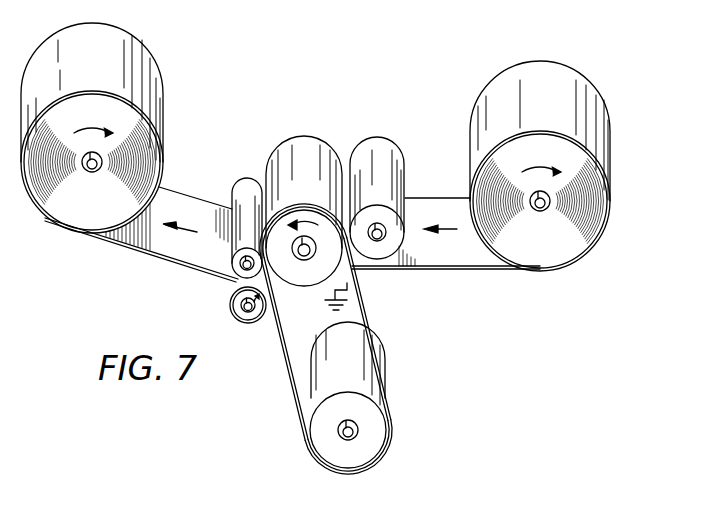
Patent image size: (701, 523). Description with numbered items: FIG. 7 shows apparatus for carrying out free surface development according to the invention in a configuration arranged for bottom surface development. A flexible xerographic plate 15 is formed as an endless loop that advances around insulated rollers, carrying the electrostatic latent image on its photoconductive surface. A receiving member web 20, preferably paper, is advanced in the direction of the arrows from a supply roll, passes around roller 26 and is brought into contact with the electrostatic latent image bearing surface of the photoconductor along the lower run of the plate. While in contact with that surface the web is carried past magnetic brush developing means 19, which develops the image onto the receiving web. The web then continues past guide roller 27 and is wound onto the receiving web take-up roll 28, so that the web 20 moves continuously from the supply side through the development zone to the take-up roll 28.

The receiving web take-up roll 28 is at (64, 34).
The receiving member web 20 is at (119, 244).
The guide roller 27 is at (247, 179).
The roller 26 is at (389, 153).
The magnetic brush developing means 19 is at (229, 303).
The flexible xerographic plate 15 is at (378, 321).